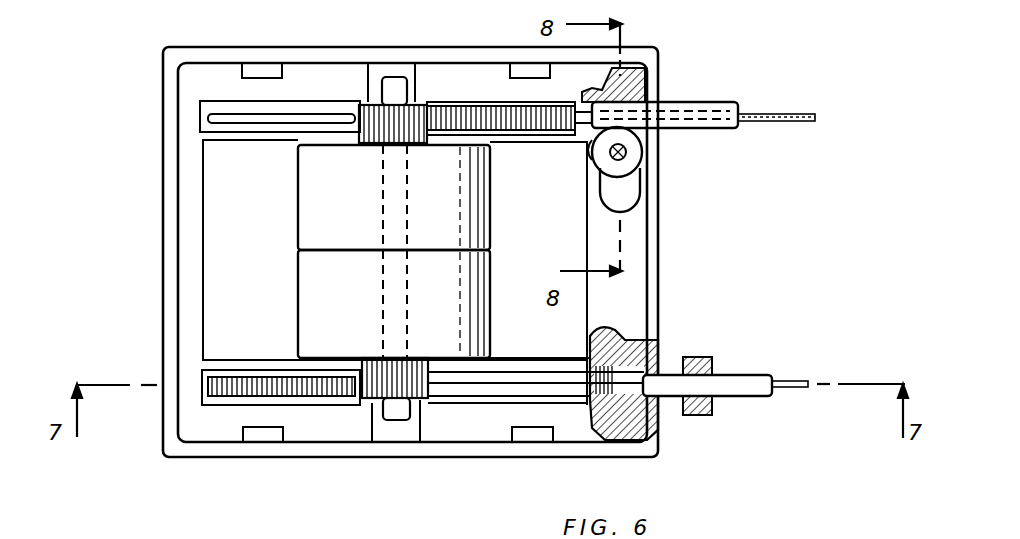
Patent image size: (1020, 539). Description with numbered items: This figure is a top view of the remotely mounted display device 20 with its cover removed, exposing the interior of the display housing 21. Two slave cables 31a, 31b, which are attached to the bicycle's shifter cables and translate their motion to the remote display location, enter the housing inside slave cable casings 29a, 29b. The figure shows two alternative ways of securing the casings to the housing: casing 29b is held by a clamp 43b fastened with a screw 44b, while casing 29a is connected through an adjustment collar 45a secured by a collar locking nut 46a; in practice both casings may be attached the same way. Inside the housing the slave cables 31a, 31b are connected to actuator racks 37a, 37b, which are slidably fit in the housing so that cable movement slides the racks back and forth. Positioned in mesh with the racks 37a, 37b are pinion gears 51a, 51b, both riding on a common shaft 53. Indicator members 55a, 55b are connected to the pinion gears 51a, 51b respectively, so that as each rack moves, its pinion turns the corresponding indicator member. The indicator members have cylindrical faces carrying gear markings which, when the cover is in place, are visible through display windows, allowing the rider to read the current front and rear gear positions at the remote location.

The display device 20 is at (146, 147).
The display housing 21 is at (475, 455).
The slave cable casing 29a is at (746, 397).
The slave cable casing 29b is at (692, 104).
The slave cable 31a is at (800, 381).
The slave cable 31b is at (791, 112).
The actuator rack 37a is at (233, 378).
The actuator rack 37b is at (455, 112).
The clamp 43b is at (634, 178).
The screw 44b is at (627, 151).
The adjustment collar 45a is at (713, 363).
The collar locking nut 46a is at (662, 356).
The pinion gear 51a is at (364, 403).
The pinion gear 51b is at (362, 107).
The shaft 53 is at (397, 421).
The indicator member 55a is at (299, 283).
The indicator member 55b is at (298, 173).